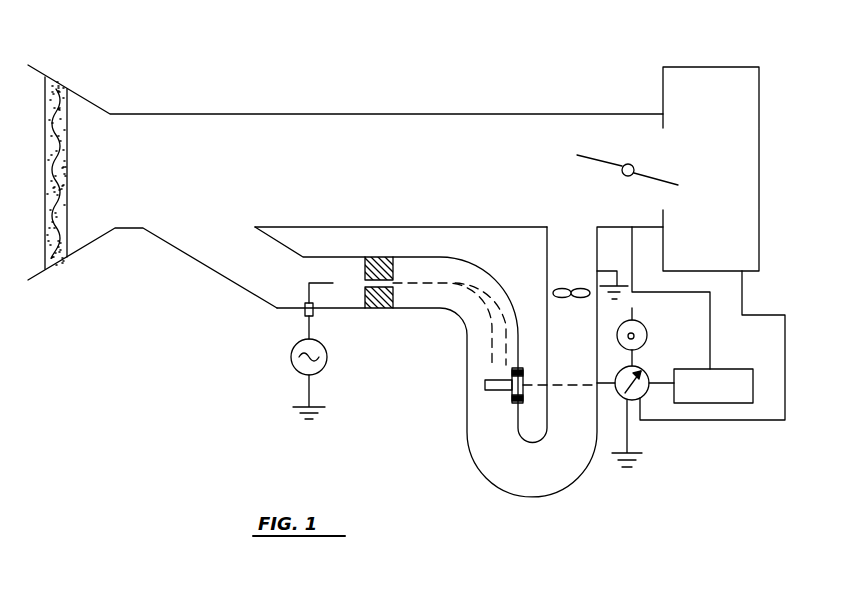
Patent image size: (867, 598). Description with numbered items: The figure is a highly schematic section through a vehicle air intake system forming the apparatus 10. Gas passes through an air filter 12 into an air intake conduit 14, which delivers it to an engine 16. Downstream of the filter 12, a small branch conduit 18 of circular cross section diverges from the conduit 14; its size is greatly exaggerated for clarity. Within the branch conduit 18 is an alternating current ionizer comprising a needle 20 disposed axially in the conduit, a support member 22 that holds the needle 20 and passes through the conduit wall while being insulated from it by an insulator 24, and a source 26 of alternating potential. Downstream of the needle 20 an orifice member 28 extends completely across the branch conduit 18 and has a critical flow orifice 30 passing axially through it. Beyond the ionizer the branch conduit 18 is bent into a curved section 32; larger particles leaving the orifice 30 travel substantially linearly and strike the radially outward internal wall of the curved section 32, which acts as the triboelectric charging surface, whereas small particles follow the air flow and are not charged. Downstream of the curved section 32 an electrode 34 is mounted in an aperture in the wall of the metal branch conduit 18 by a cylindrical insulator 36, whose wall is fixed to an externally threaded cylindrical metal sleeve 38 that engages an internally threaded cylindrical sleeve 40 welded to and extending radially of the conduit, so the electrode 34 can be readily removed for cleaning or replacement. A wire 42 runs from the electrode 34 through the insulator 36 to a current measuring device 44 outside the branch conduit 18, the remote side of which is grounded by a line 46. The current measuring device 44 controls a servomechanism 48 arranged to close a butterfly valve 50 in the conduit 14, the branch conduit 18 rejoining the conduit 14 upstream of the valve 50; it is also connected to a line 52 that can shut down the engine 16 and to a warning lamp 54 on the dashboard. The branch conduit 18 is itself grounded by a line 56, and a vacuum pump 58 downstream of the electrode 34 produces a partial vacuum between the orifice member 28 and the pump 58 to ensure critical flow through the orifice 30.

The apparatus 10 is at (392, 85).
The air filter 12 is at (67, 110).
The air intake conduit 14 is at (387, 180).
The engine 16 is at (727, 80).
The branch conduit 18 is at (255, 275).
The needle 20 is at (325, 287).
The support member 22 is at (303, 300).
The insulator 24 is at (315, 316).
The source of alternating potential 26 is at (291, 360).
The orifice member 28 is at (382, 262).
The critical flow orifice 30 is at (395, 290).
The curved section 32 is at (460, 330).
The electrode 34 is at (492, 390).
The cylindrical insulator 36 is at (521, 380).
The cylindrical metal sleeve 38 is at (523, 397).
The cylindrical sleeve 40 is at (514, 403).
The wire 42 is at (605, 388).
The current measuring device 44 is at (646, 371).
The line 46 is at (627, 447).
The servomechanism 48 is at (738, 369).
The butterfly valve 50 is at (607, 162).
The line 52 is at (740, 421).
The warning lamp 54 is at (647, 335).
The line 56 is at (615, 271).
The vacuum pump 58 is at (556, 291).